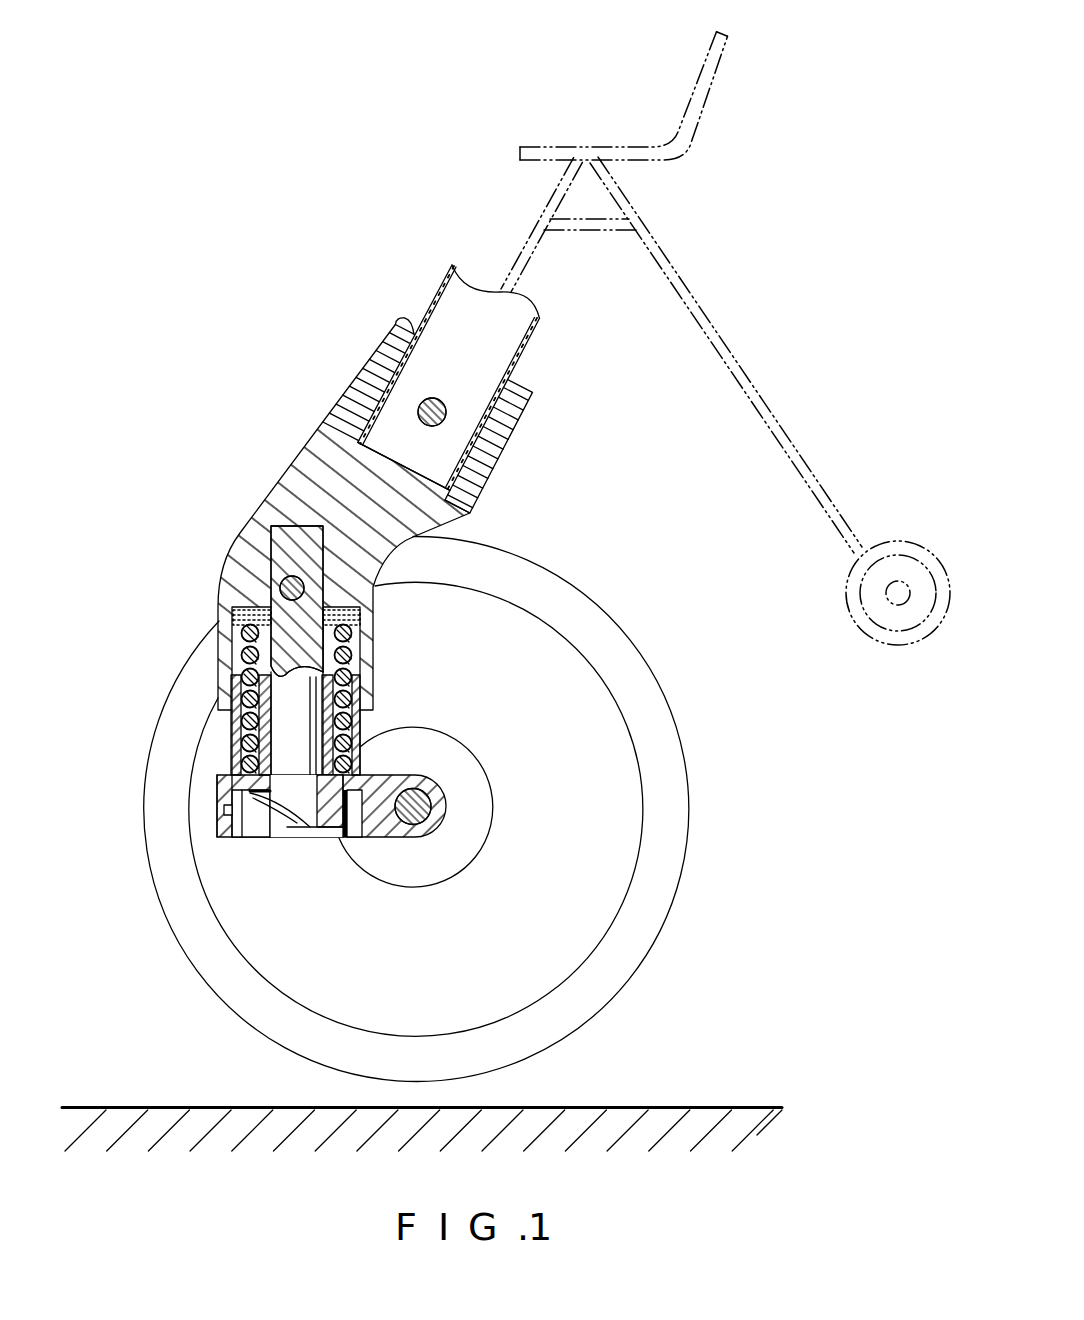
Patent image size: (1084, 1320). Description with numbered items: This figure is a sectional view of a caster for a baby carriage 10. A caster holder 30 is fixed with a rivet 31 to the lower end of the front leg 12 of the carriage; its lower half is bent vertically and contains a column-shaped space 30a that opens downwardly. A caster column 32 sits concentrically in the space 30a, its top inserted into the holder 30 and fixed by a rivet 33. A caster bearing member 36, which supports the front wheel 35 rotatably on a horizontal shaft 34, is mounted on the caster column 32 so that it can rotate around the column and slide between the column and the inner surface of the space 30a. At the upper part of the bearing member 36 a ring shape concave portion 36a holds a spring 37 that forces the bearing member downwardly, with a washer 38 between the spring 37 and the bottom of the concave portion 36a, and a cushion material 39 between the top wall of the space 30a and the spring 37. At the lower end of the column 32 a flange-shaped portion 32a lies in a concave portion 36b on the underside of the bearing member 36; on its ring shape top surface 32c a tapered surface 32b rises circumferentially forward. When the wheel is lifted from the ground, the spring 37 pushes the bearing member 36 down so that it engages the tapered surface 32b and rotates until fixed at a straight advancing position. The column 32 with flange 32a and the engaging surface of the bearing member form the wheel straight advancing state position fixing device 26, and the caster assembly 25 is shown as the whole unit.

The baby carriage 10 is at (733, 335).
The front leg 12 is at (540, 335).
The caster unit 25 is at (208, 535).
The wheel straight advancing state position fixing device 26 is at (342, 862).
The caster holder 30 is at (325, 420).
The column-shaped space 30a is at (352, 645).
The rivet 31 is at (446, 415).
The caster column 32 is at (285, 677).
The flange-shaped portion 32a is at (300, 835).
The tapered surface 32b is at (253, 837).
The ring shape top surface 32c is at (288, 850).
The rivet 33 is at (293, 585).
The horizontal shaft 34 is at (443, 798).
The front wheel 35 is at (578, 602).
The caster bearing member 36 is at (386, 840).
The ring shape concave portion 36a is at (360, 738).
The concave portion 36b is at (227, 812).
The spring 37 is at (240, 742).
The washer 38 is at (362, 763).
The cushion material 39 is at (233, 613).